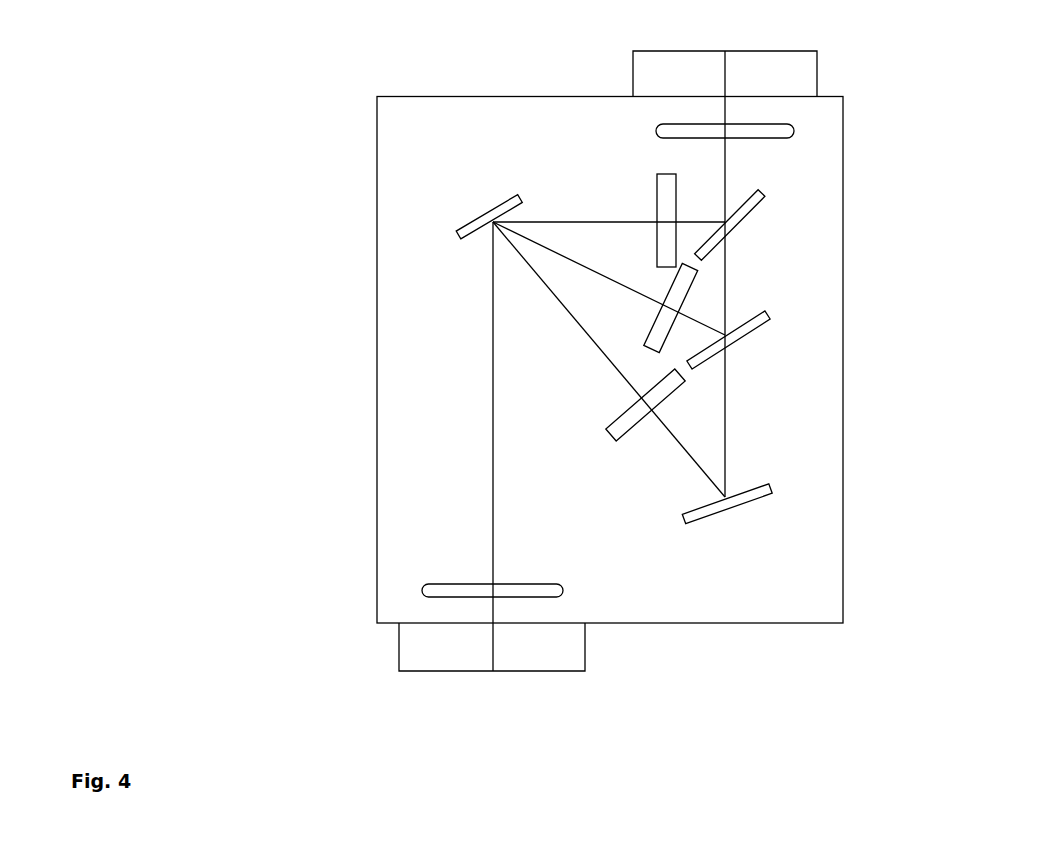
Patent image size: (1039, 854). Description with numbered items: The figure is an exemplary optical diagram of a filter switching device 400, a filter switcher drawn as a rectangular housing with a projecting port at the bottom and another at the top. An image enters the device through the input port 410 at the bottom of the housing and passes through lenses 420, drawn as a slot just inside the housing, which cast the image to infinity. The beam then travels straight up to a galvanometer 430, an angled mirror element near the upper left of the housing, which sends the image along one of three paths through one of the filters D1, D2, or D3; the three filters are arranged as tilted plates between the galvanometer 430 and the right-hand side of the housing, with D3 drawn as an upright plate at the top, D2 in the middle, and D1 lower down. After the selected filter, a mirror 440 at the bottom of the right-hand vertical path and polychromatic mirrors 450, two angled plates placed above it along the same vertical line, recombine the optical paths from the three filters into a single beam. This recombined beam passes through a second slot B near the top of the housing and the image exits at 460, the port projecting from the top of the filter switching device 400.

The filter switching device 400 is at (694, 341).
The input port 410 is at (492, 472).
The lenses 420 is at (489, 565).
The galvanometer 430 is at (585, 331).
The mirror 440 is at (727, 519).
The polychromatic mirrors 450 is at (739, 279).
The exit 460 is at (753, 274).
The output aperture slot B is at (739, 131).
The filter D1 is at (641, 428).
The filter D2 is at (652, 307).
The filter D3 is at (648, 220).